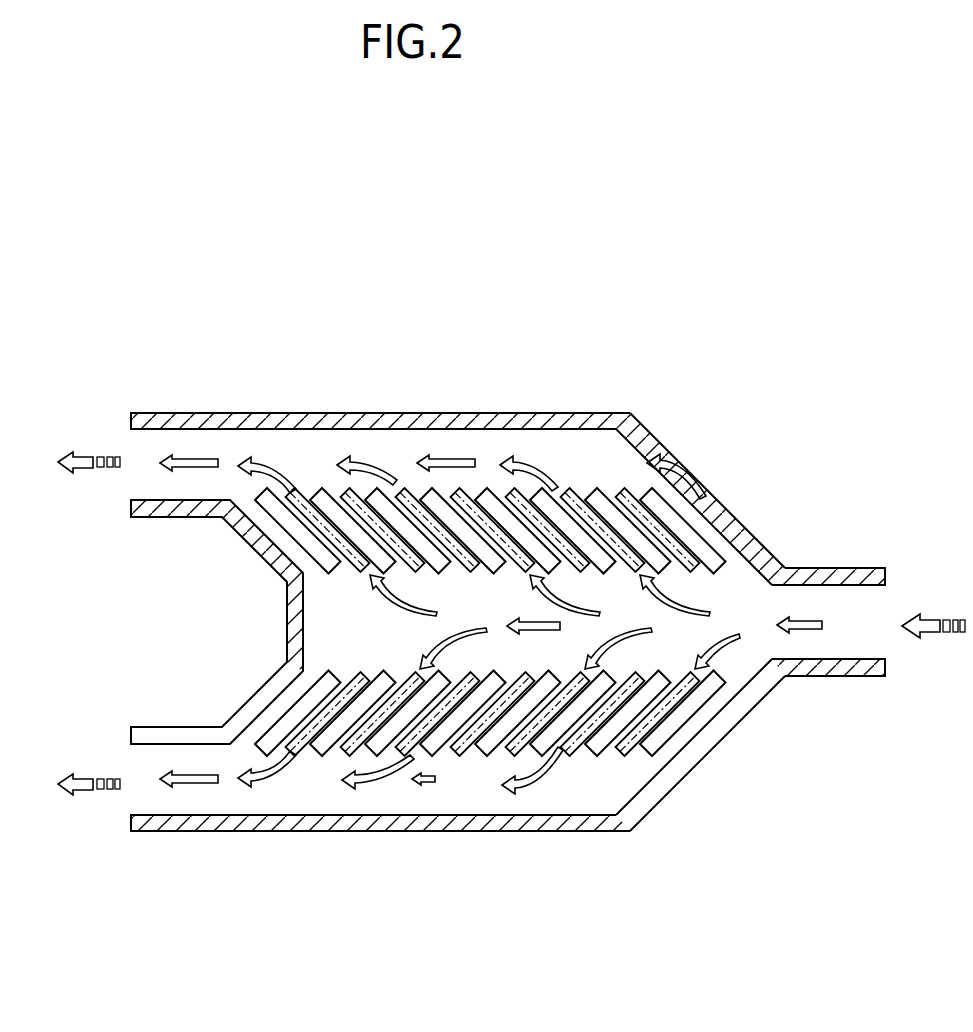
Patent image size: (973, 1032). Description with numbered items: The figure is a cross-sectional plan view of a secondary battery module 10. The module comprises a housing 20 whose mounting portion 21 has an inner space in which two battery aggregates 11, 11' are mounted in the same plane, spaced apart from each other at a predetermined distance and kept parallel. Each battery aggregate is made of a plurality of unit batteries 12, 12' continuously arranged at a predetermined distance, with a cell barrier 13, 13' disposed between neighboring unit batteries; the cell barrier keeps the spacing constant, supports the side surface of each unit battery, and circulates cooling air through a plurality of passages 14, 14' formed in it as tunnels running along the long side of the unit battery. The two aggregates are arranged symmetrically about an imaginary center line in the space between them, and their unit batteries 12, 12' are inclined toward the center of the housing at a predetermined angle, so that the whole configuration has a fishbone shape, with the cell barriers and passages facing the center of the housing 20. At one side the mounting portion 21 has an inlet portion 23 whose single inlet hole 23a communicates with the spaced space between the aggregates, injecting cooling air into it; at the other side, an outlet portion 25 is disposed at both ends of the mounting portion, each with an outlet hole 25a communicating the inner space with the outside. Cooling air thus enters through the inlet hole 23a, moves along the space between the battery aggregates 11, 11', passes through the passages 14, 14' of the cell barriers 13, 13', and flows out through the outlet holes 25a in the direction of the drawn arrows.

The secondary battery module 10 is at (553, 233).
The battery aggregate 11 is at (435, 457).
The battery aggregate 11' is at (450, 786).
The unit battery 12 is at (490, 455).
The unit battery 12' is at (490, 805).
The cell barrier 13 is at (465, 455).
The cell barrier 13' is at (465, 805).
The passage 14 is at (658, 454).
The passage 14' is at (662, 791).
The housing 20 is at (790, 500).
The mounting portion 21 is at (260, 690).
The inlet portion 23 is at (848, 678).
The inlet hole 23a is at (885, 603).
The outlet portion 25 is at (212, 415).
The outlet hole 25a is at (128, 490).